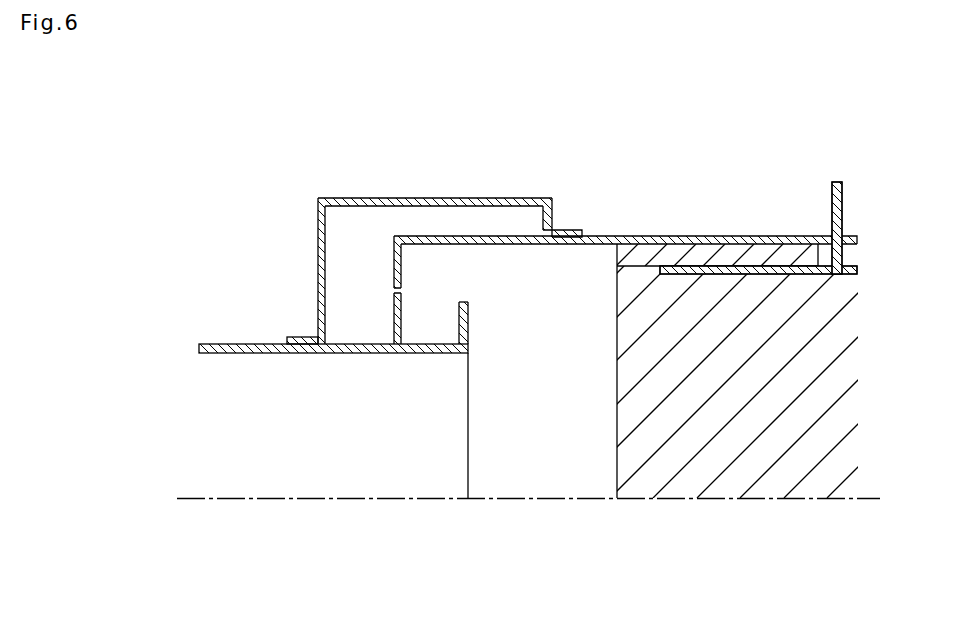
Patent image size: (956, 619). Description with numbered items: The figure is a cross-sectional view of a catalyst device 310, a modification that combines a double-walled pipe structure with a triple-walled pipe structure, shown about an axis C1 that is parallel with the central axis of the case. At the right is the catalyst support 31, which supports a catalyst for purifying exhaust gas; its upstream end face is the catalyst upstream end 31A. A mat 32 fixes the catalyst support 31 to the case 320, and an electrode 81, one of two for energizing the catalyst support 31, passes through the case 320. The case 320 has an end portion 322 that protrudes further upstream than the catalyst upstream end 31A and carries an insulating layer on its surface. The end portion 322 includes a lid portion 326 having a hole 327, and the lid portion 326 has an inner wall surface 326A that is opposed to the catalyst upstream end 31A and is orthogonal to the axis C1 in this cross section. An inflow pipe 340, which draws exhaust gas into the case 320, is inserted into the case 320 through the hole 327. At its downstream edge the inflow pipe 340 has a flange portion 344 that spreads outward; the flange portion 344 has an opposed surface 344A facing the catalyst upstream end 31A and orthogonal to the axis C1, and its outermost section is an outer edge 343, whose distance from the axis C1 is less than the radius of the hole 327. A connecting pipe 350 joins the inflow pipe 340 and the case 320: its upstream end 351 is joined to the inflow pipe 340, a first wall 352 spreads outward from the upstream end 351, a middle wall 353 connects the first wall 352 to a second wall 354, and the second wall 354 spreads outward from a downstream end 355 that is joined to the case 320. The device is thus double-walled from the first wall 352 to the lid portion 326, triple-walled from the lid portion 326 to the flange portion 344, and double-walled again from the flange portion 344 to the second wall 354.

The catalyst device 310 is at (692, 93).
The catalyst support 31 is at (628, 462).
The catalyst upstream end 31A is at (617, 420).
The mat 32 is at (778, 250).
The case 320 is at (657, 236).
The end portion 322 is at (580, 246).
The lid portion 326 is at (394, 258).
The inner wall surface 326A is at (401, 262).
The hole 327 is at (401, 292).
The electrode 81 is at (835, 182).
The connecting pipe 350 is at (372, 197).
The middle wall 353 is at (463, 197).
The first wall 352 is at (318, 236).
The second wall 354 is at (549, 216).
The downstream end 355 is at (565, 228).
The upstream end 351 is at (293, 337).
The inflow pipe 340 is at (362, 353).
The flange portion 344 is at (459, 328).
The outer edge 343 is at (464, 302).
The opposed surface 344A is at (468, 325).
The axis C1 is at (263, 502).